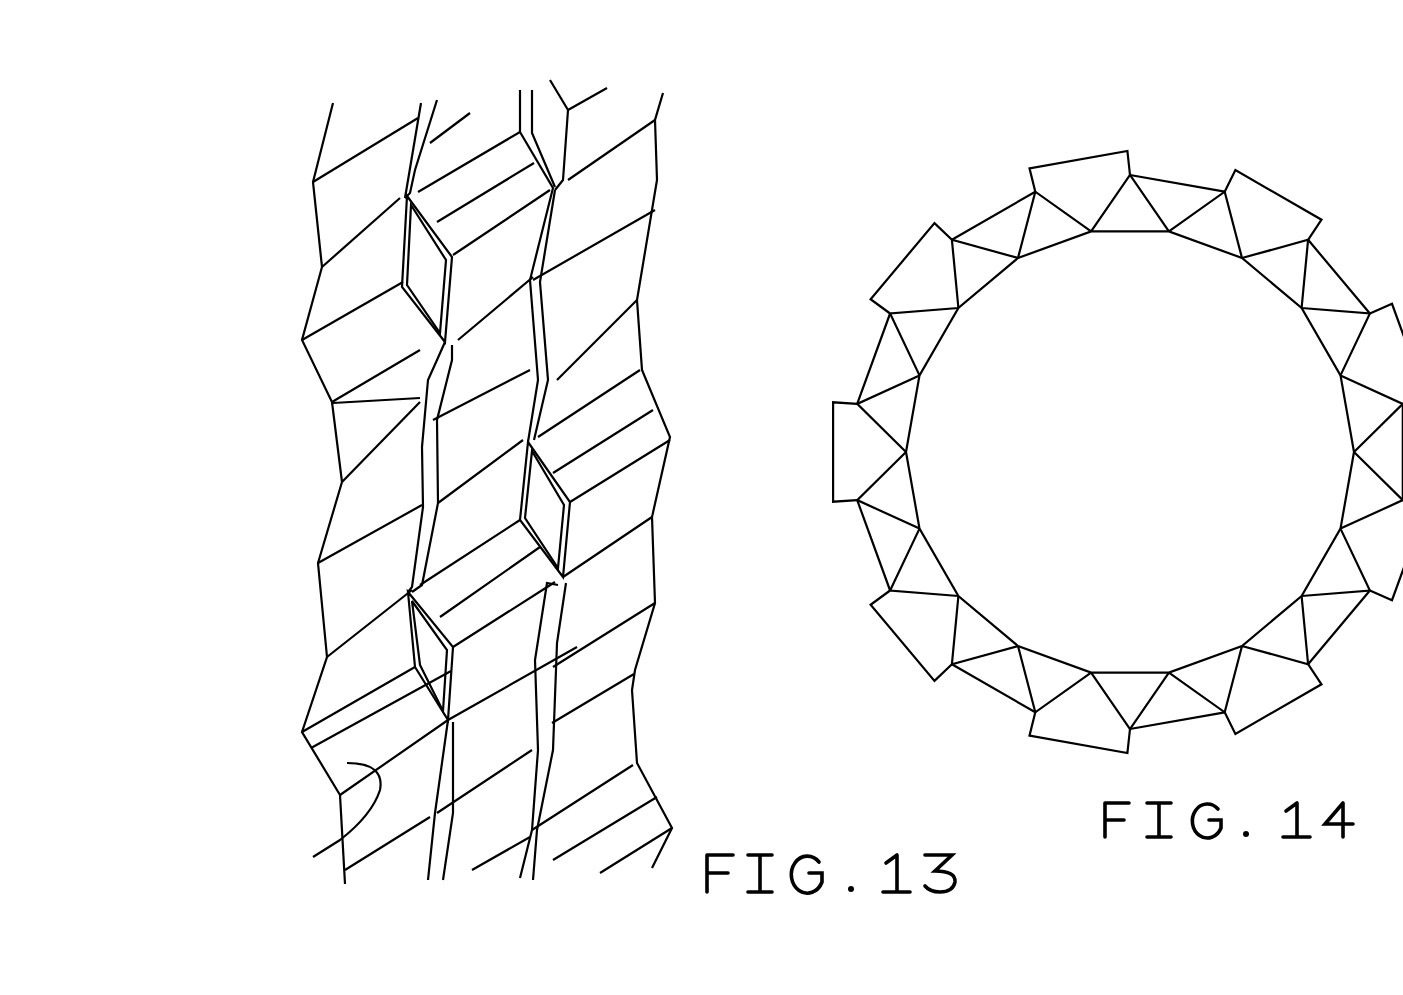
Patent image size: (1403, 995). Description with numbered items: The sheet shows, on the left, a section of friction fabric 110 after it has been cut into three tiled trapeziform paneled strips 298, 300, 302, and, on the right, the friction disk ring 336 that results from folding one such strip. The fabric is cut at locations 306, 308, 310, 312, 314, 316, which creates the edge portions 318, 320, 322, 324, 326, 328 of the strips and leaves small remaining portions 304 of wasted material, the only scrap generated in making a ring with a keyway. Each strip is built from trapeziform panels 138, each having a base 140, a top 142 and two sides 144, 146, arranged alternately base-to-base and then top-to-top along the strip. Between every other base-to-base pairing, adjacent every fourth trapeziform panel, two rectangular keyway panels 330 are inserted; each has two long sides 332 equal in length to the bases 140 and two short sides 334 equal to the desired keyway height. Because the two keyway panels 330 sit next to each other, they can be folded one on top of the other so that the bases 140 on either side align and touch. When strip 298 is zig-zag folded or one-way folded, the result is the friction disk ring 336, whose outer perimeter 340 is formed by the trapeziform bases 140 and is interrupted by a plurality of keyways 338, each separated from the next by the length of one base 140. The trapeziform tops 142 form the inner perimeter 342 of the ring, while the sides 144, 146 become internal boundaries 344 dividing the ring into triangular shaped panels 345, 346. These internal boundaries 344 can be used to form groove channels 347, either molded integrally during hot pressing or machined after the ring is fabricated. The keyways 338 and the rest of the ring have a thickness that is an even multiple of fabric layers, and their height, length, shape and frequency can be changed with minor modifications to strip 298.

In FIG. 13, the friction fabric 110 is at (335, 895).
In FIG. 13, the trapeziform panel 138 is at (358, 502).
In FIG. 13, the base 140 is at (367, 387).
In FIG. 14, the base 140 is at (863, 388).
In FIG. 13, the top 142 is at (340, 470).
In FIG. 14, the top 142 is at (913, 483).
In FIG. 13, the side 144 is at (330, 402).
In FIG. 13, the side 146 is at (297, 412).
In FIG. 13, the paneled strip 298 is at (388, 878).
In FIG. 13, the paneled strip 300 is at (482, 878).
In FIG. 13, the paneled strip 302 is at (599, 878).
In FIG. 13, the remaining portion 304 is at (423, 277).
In FIG. 13, the cutting location 306 is at (328, 102).
In FIG. 13, the cutting location 308 is at (430, 93).
In FIG. 13, the cutting location 310 is at (464, 115).
In FIG. 13, the cutting location 312 is at (522, 85).
In FIG. 13, the cutting location 314 is at (555, 70).
In FIG. 13, the cutting location 316 is at (668, 93).
In FIG. 13, the edge portion 318 is at (313, 215).
In FIG. 13, the edge portion 320 is at (373, 250).
In FIG. 13, the edge portion 322 is at (438, 350).
In FIG. 13, the edge portion 324 is at (557, 225).
In FIG. 13, the edge portion 326 is at (550, 252).
In FIG. 13, the edge portion 328 is at (638, 300).
In FIG. 13, the keyway panel 330 is at (350, 763).
In FIG. 13, the long side 332 is at (333, 717).
In FIG. 13, the short side 334 is at (357, 740).
In FIG. 14, the friction disk ring 336 is at (1002, 197).
In FIG. 14, the keyway 338 is at (922, 268).
In FIG. 14, the outer perimeter 340 is at (875, 302).
In FIG. 14, the inner perimeter 342 is at (920, 533).
In FIG. 14, the internal boundary 344 is at (900, 513).
In FIG. 14, the triangular shaped panel 345 is at (898, 410).
In FIG. 14, the triangular shaped panel 346 is at (887, 368).
In FIG. 14, the groove channel 347 is at (907, 388).